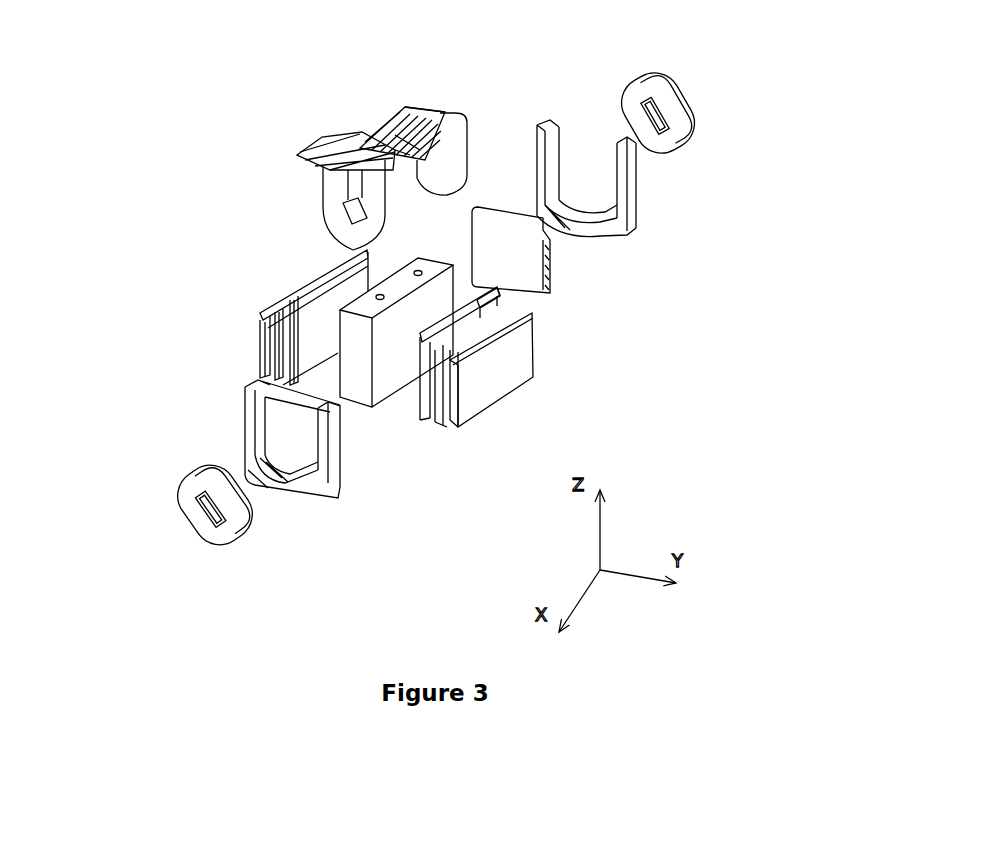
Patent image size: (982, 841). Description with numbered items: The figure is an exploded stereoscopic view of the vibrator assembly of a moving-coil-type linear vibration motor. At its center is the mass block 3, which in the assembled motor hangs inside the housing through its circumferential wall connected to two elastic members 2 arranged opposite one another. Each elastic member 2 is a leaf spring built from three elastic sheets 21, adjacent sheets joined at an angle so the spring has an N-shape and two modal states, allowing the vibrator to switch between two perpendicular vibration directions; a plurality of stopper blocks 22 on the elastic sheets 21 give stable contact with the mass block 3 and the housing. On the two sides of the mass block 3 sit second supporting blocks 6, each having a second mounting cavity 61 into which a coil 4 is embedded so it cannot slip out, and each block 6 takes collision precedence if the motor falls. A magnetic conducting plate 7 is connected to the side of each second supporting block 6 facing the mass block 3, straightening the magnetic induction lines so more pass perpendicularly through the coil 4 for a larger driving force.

The elastic member 2 is at (253, 303).
The mass block 3 is at (373, 408).
The coil 4 is at (172, 478).
The second supporting block 6 is at (650, 188).
The second mounting cavity 61 is at (590, 157).
The magnetic conducting plate 7 is at (560, 273).
The elastic sheet 21 is at (498, 387).
The stopper block 22 is at (500, 300).